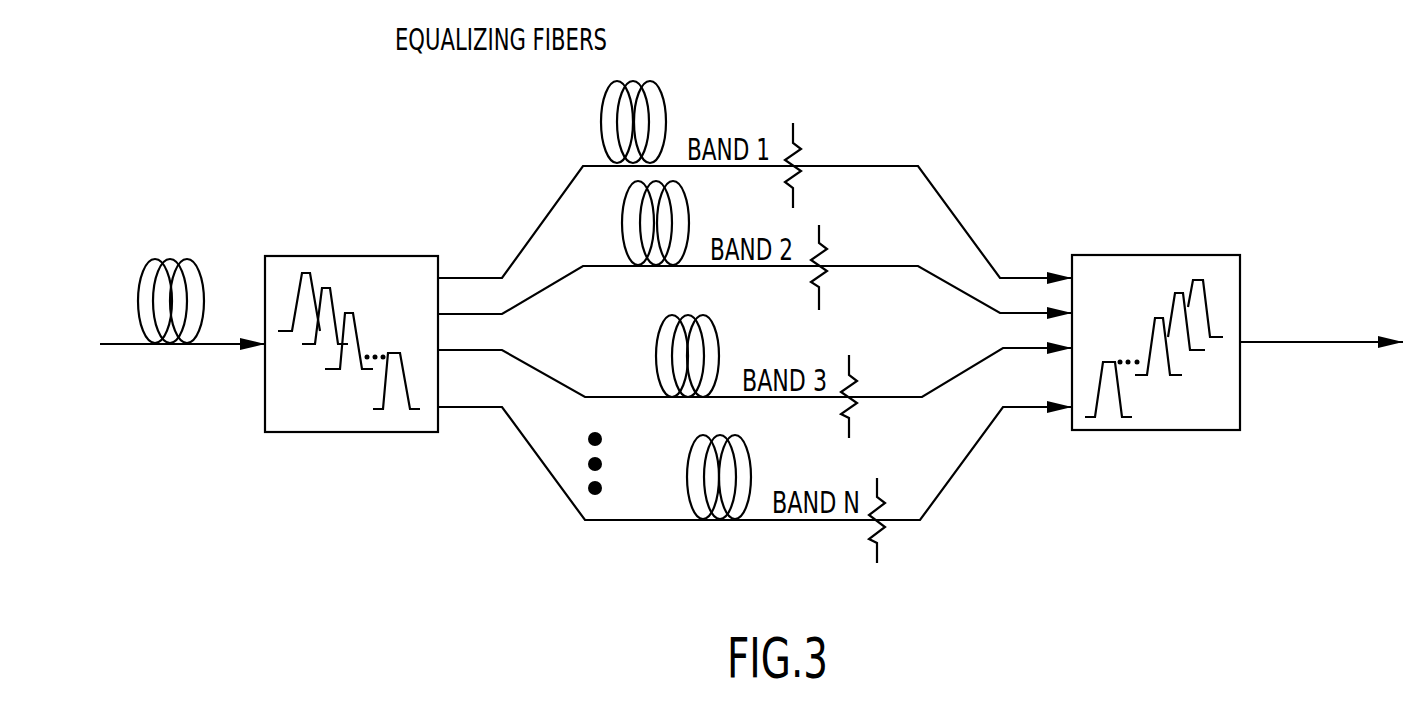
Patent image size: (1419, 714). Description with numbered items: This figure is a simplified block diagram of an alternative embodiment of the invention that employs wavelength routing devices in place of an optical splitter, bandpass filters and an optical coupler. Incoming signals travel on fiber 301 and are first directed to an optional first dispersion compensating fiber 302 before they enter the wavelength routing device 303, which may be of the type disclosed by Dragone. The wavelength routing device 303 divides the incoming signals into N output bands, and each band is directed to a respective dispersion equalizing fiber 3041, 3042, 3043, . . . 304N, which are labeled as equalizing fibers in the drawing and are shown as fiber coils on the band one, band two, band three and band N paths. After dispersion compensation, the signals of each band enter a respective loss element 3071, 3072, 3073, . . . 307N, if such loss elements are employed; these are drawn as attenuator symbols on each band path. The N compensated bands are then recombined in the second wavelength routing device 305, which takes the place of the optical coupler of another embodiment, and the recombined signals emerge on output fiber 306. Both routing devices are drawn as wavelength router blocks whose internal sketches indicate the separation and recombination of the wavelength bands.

The fiber 301 is at (123, 344).
The first dispersion compensating fiber 302 is at (170, 259).
The wavelength routing device 303 is at (352, 256).
The dispersion equalizing fiber 3041 is at (632, 81).
The dispersion equalizing fiber 3042 is at (690, 208).
The dispersion equalizing fiber 3043 is at (718, 328).
The dispersion equalizing fiber 304N is at (707, 520).
The wavelength routing device 305 is at (1158, 255).
The fiber 306 is at (1337, 338).
The loss element 3071 is at (793, 140).
The loss element 3072 is at (819, 240).
The loss element 3073 is at (849, 365).
The loss element 307N is at (877, 556).